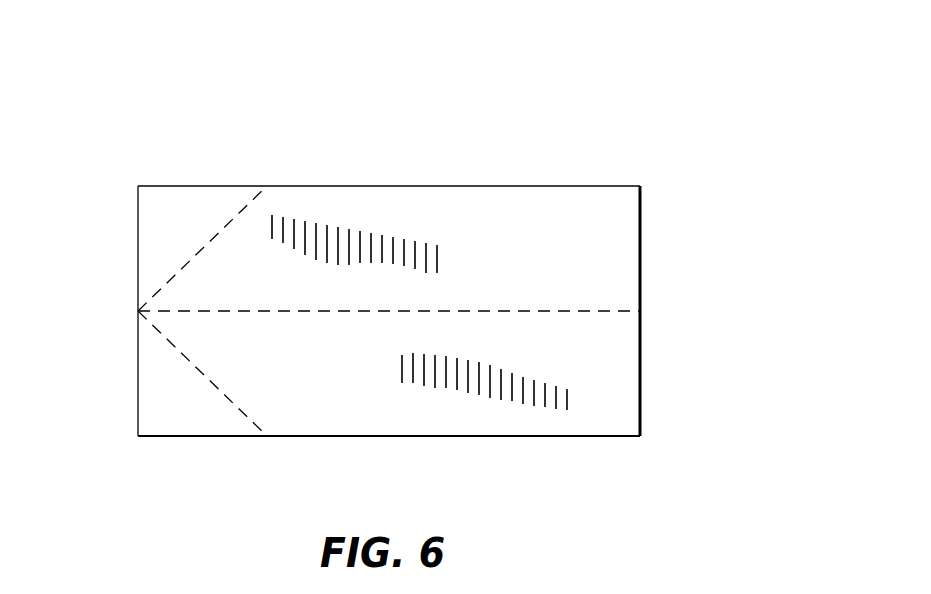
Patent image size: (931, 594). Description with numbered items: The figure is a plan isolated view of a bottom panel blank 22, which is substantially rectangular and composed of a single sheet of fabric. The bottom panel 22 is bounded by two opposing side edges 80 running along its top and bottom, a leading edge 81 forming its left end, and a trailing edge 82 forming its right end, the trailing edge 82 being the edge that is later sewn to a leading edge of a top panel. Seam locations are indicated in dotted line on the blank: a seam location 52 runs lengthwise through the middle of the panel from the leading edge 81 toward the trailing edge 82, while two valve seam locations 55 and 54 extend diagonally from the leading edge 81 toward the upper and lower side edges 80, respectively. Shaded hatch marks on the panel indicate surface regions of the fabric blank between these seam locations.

The bottom panel 22 is at (563, 93).
The side edges 80 is at (380, 186).
The trailing edge 82 is at (640, 387).
The leading edge 81 is at (138, 402).
The seam location 52 is at (580, 311).
The valve seam location 55 is at (212, 238).
The valve seam location 54 is at (205, 383).